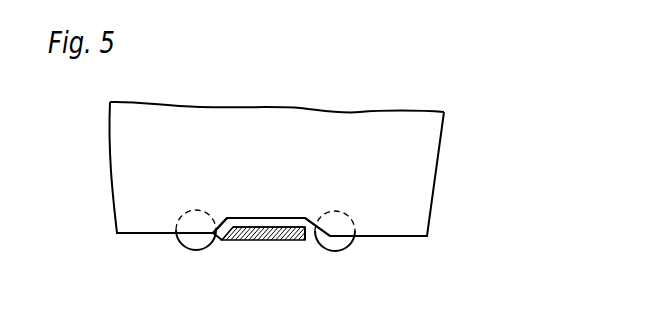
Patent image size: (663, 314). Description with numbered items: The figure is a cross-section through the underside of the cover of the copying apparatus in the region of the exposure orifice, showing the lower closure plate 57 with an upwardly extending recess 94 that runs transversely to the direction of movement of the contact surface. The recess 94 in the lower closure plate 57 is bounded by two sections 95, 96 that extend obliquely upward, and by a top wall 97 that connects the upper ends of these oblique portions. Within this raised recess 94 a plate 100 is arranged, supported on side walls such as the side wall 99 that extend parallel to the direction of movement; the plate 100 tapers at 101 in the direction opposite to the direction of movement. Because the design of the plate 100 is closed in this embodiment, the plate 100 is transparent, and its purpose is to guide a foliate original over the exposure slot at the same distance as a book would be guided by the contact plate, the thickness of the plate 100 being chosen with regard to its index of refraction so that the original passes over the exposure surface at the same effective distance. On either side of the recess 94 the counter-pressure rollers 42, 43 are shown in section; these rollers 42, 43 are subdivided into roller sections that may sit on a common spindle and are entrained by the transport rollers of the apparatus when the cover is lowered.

The lower closure plate 57 is at (410, 236).
The recess 94 is at (249, 217).
The oblique section 95 is at (224, 221).
The oblique section 96 is at (312, 223).
The top wall 97 is at (276, 217).
The plate 100 is at (275, 242).
The taper 101 is at (225, 242).
The side wall 99 is at (306, 242).
The counter-pressure roller 42 is at (192, 241).
The counter-pressure roller 43 is at (350, 245).